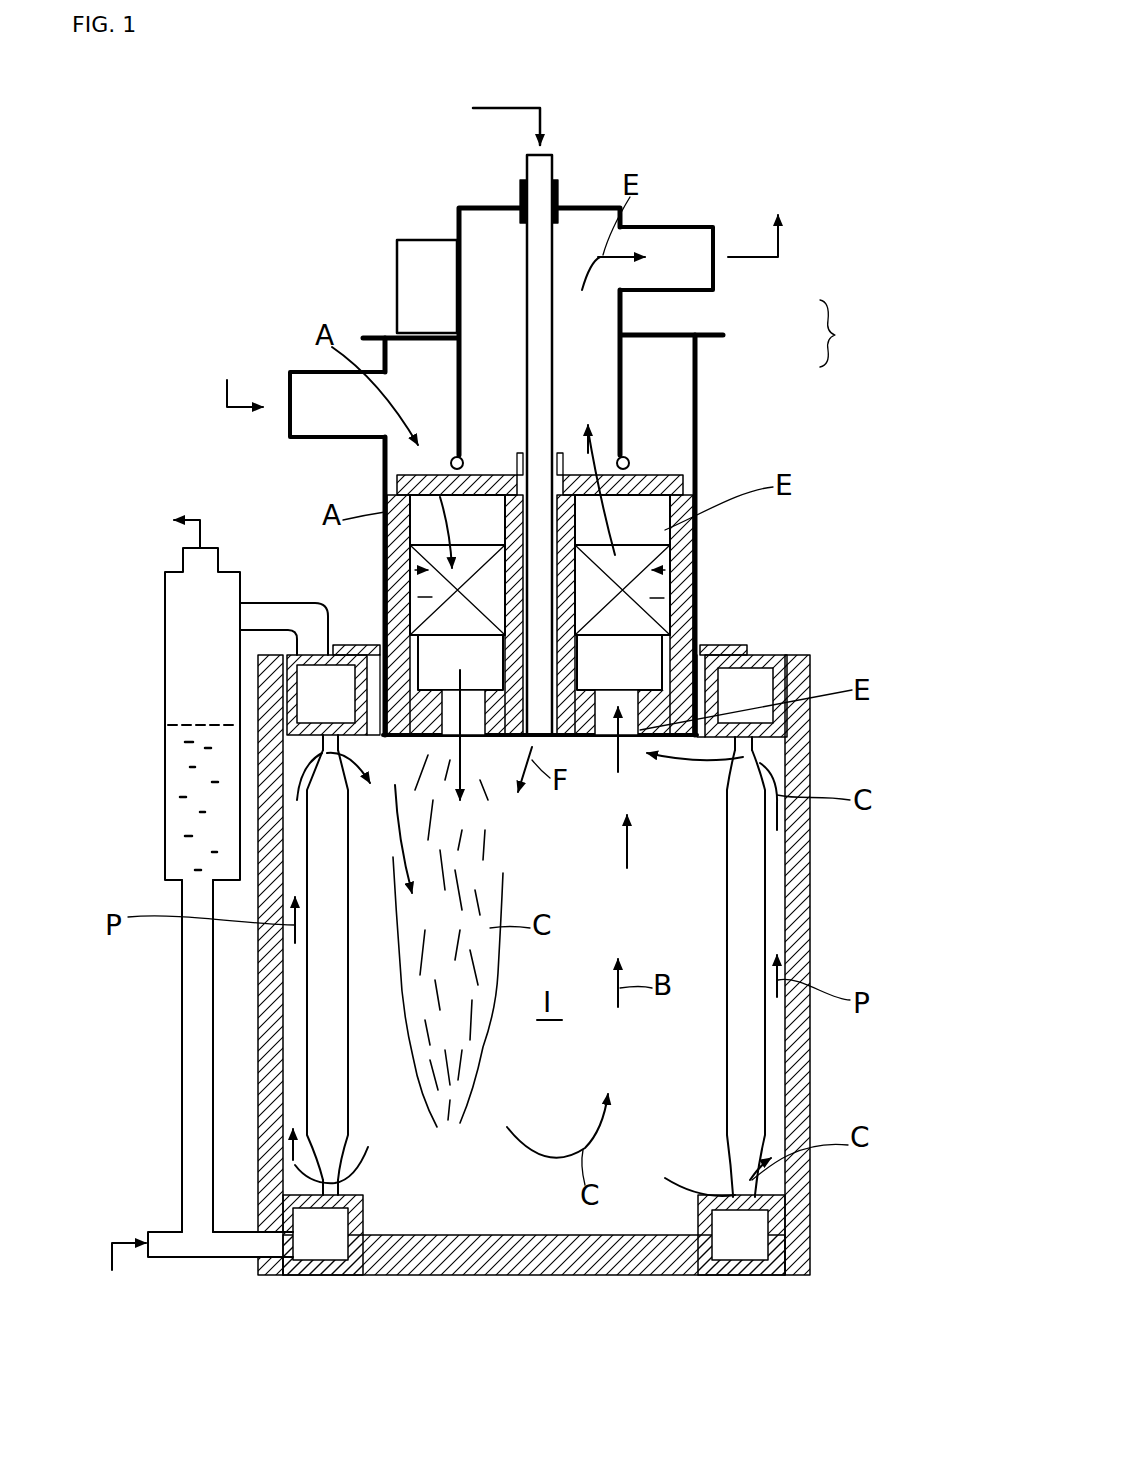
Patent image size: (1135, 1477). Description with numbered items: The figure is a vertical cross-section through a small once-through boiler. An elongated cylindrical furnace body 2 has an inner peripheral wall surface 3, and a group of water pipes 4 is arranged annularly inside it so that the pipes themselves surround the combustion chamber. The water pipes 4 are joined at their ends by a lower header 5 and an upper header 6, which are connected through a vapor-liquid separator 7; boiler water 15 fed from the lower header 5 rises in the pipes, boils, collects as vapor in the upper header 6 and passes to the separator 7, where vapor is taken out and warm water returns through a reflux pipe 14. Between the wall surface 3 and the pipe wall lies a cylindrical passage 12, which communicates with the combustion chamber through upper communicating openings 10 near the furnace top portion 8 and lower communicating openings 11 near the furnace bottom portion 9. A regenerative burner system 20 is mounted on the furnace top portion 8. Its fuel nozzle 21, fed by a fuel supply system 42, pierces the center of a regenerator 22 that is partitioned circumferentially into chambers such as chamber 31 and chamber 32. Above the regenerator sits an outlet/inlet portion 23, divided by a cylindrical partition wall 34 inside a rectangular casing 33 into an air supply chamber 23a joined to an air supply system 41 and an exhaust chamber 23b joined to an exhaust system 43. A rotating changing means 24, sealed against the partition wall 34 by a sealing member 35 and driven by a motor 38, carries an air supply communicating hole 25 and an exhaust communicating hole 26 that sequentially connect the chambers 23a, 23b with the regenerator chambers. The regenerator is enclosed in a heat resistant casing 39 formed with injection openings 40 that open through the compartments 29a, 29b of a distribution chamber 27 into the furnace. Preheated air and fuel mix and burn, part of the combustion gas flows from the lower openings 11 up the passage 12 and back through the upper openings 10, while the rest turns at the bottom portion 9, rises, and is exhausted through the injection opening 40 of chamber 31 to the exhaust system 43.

The furnace body 2 is at (803, 853).
The inner peripheral wall surface 3 is at (285, 1053).
The water pipes 4 is at (337, 1097).
The lower header 5 is at (338, 1265).
The upper header 6 is at (773, 655).
The vapor-liquid separator 7 is at (165, 700).
The furnace top portion 8 is at (490, 943).
The furnace bottom portion 9 is at (532, 1258).
The upper communicating openings 10 is at (318, 746).
The lower communicating openings 11 is at (318, 1184).
The passage 12 is at (290, 1010).
The reflux pipe 14 is at (182, 975).
The boiler water 15 is at (165, 828).
The regenerative burner system 20 is at (338, 275).
The fuel nozzle 21 is at (555, 168).
The regenerator 22 is at (400, 580).
The outlet/inlet portion 23 is at (870, 355).
The air supply chamber 23a is at (665, 377).
The exhaust chamber 23b is at (593, 320).
The changing means 24 is at (685, 473).
The air supply communicating hole 25 is at (395, 478).
The exhaust communicating hole 26 is at (578, 453).
The distribution chamber 27 is at (500, 673).
The chamber of distribution chamber 29a is at (495, 533).
The chamber of distribution chamber 29b is at (660, 533).
The chamber of regenerator 31 is at (660, 570).
The chamber of regenerator 32 is at (408, 572).
The casing 33 is at (698, 397).
The partition wall 34 is at (620, 410).
The sealing member 35 is at (630, 452).
The motor 38 is at (417, 240).
The heat resistant casing 39 is at (677, 550).
The injection openings 40 is at (383, 636).
The air supply system 41 is at (227, 393).
The fuel supply system 42 is at (477, 110).
The exhaust system 43 is at (780, 250).